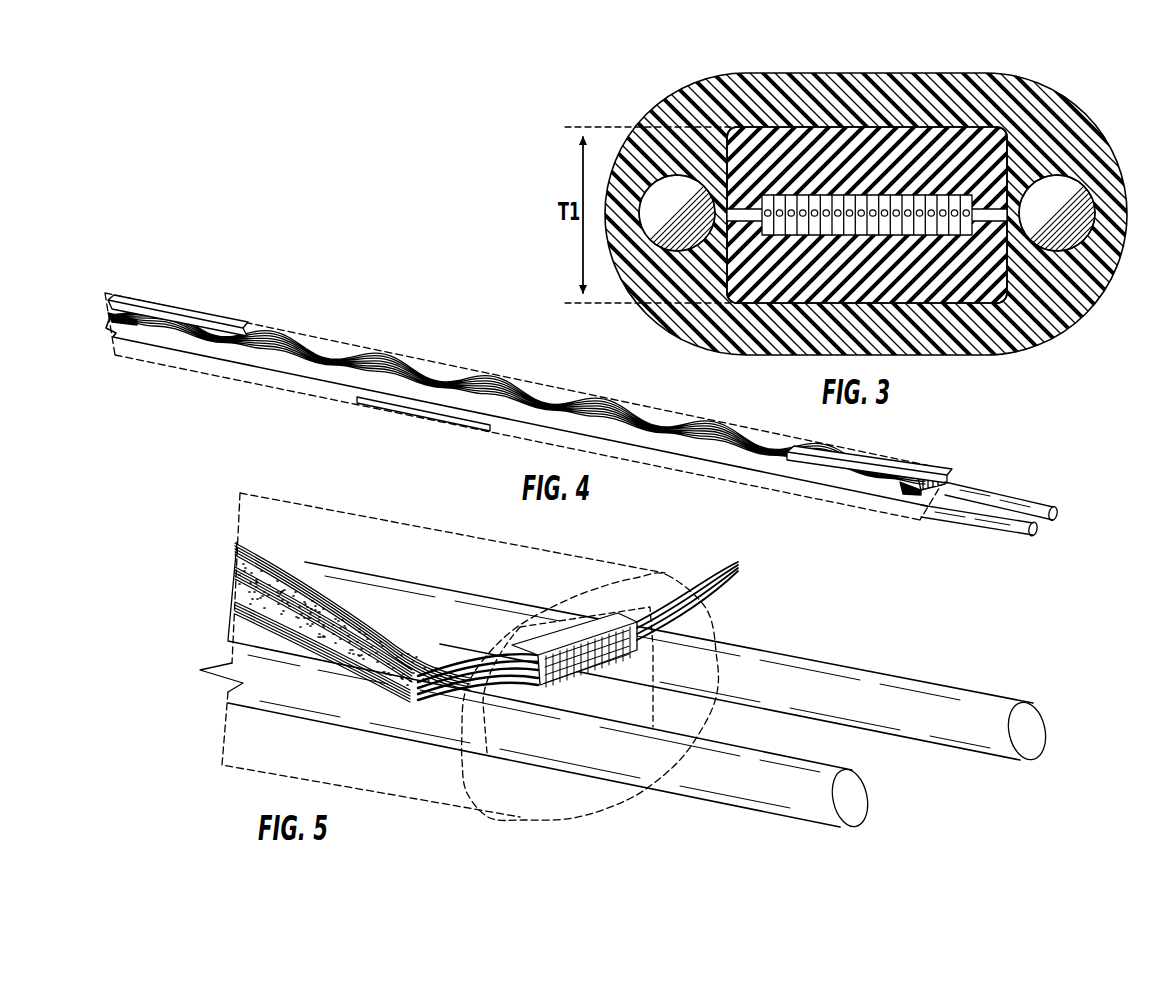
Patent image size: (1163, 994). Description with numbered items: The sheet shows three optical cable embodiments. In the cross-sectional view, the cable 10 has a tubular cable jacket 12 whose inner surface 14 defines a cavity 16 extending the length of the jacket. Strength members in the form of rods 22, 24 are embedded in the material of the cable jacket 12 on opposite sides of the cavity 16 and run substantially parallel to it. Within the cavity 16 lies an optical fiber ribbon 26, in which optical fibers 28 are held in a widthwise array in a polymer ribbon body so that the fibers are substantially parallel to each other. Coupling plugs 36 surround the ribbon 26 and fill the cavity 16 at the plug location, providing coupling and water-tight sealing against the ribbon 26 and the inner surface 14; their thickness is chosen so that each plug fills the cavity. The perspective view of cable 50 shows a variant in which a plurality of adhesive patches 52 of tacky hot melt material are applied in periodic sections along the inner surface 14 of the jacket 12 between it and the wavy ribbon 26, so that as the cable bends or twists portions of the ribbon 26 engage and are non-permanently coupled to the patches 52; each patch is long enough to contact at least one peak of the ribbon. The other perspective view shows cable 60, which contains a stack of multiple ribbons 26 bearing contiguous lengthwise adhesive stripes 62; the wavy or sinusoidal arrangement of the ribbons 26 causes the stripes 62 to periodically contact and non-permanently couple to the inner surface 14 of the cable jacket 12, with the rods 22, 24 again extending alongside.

In FIG. 3, the cable 10 is at (1135, 50).
In FIG. 3, the cable jacket 12 is at (1013, 92).
In FIG. 4, the cable jacket 12 is at (953, 473).
In FIG. 5, the cable jacket 12 is at (718, 649).
In FIG. 3, the inner surface 14 is at (820, 135).
In FIG. 5, the inner surface 14 is at (655, 712).
In FIG. 3, the cavity 16 is at (760, 292).
In FIG. 4, the cavity 16 is at (937, 500).
In FIG. 5, the cavity 16 is at (588, 692).
In FIG. 3, the rod 22 is at (667, 217).
In FIG. 4, the rod 22 is at (1013, 527).
In FIG. 5, the rod 22 is at (853, 800).
In FIG. 3, the rod 24 is at (1075, 228).
In FIG. 4, the rod 24 is at (1053, 514).
In FIG. 5, the rod 24 is at (1028, 738).
In FIG. 4, the optical fiber ribbon 26 is at (722, 428).
In FIG. 5, the optical fiber ribbon 26 is at (591, 624).
In FIG. 3, the optical fibers 28 is at (766, 222).
In FIG. 3, the coupling plug 36 is at (992, 157).
In FIG. 4, the cable 50 is at (1064, 527).
In FIG. 4, the adhesive patches 52 is at (188, 320).
In FIG. 5, the cable 60 is at (1060, 704).
In FIG. 5, the adhesive stripes 62 is at (328, 628).